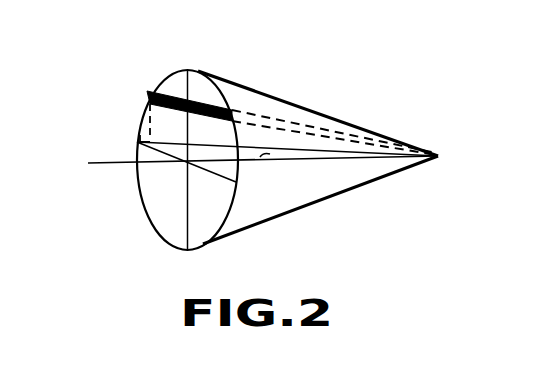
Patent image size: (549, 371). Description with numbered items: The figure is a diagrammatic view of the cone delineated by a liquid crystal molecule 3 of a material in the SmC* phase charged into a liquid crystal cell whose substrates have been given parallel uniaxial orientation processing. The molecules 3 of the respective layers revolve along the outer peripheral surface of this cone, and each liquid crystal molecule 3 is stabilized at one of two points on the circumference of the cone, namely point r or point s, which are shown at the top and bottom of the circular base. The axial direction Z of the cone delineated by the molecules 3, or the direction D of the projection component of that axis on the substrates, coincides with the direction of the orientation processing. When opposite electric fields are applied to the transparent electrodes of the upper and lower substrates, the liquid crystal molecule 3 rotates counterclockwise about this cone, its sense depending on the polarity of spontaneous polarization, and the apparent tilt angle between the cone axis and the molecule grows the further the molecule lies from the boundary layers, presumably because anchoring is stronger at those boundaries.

The liquid crystal molecule 3 is at (148, 91).
The point r is at (187, 102).
The point S s is at (187, 220).
The axial direction of the cone Z is at (249, 165).
The direction of the projection component D is at (139, 94).